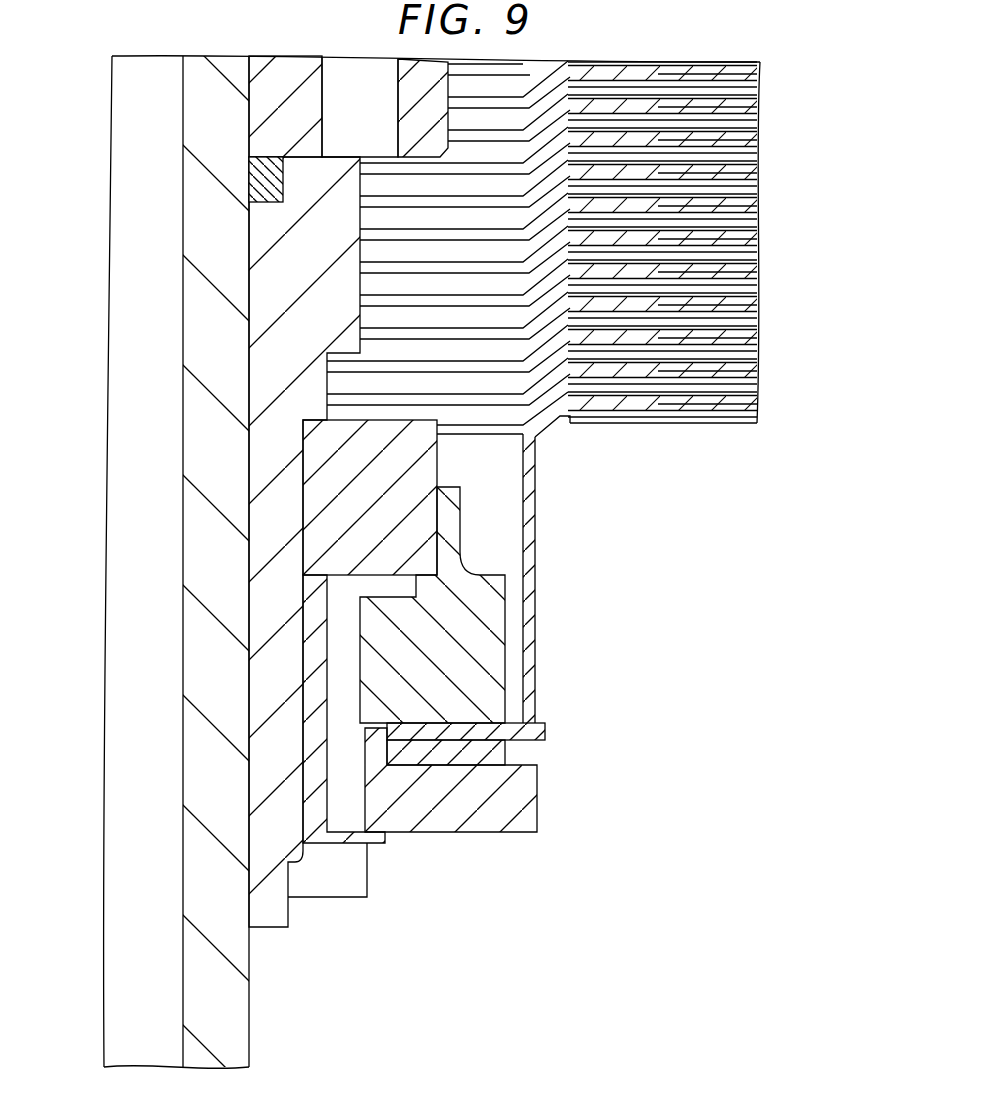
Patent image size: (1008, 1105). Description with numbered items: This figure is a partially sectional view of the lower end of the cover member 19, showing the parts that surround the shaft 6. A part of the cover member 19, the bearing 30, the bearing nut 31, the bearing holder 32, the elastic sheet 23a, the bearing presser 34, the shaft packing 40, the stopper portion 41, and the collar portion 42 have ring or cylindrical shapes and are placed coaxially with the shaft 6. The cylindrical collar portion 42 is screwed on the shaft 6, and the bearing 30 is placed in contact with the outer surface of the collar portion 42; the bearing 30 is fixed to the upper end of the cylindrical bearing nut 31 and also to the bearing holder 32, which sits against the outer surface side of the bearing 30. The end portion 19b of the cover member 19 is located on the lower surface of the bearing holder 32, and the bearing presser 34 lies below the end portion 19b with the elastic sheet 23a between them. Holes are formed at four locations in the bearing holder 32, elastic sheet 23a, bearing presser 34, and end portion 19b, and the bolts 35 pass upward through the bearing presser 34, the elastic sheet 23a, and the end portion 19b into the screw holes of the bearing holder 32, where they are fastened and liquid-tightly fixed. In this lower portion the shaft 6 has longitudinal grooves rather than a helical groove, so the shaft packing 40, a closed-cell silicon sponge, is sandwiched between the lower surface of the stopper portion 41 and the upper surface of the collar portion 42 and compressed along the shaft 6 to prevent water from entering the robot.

The shaft 6 is at (237, 1003).
The cover member 19 is at (793, 302).
The end portion 19b is at (540, 727).
The elastic sheet 23a is at (480, 752).
The bearing 30 is at (425, 458).
The bearing nut 31 is at (320, 808).
The bearing holder 32 is at (500, 640).
The bearing presser 34 is at (520, 800).
The bolts 35 is at (328, 883).
The shaft packing 40 is at (265, 182).
The stopper portion 41 is at (275, 108).
The collar portion 42 is at (270, 290).